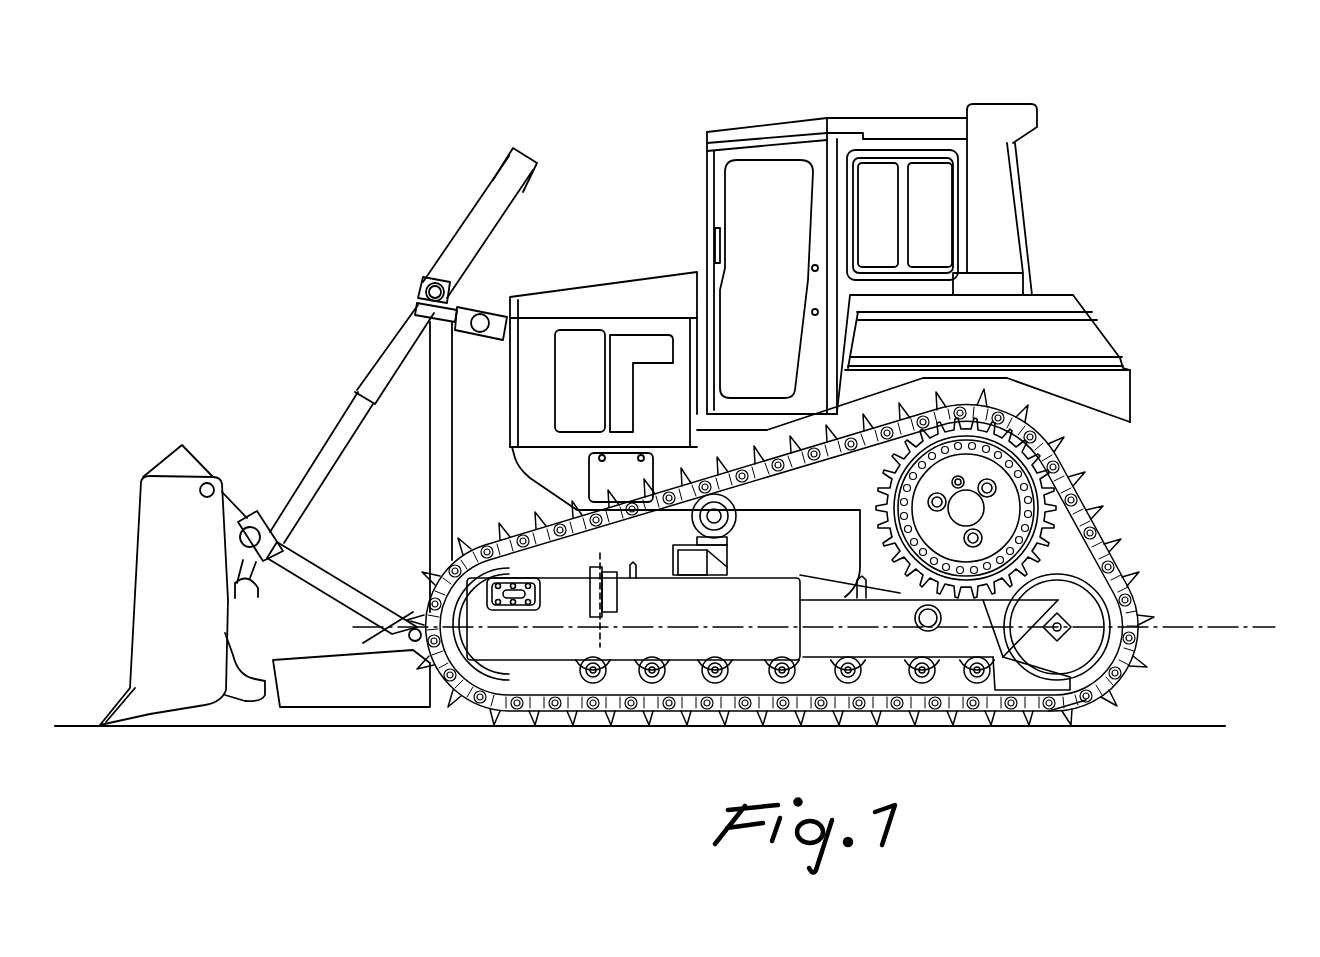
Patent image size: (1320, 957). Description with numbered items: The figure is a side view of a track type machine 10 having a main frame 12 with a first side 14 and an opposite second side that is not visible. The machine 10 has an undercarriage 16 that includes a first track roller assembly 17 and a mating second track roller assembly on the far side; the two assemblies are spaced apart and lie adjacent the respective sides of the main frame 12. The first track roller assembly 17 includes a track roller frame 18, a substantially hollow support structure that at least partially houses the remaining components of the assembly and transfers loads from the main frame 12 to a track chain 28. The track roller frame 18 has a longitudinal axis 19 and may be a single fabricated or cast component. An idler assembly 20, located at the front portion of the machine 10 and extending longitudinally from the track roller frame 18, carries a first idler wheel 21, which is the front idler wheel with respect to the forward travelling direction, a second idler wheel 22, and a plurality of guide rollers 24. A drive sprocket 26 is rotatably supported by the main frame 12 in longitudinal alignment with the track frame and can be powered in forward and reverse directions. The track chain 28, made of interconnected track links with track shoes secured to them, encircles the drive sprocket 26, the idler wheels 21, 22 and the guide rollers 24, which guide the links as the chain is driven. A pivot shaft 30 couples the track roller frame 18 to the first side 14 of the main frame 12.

The track type machine 10 is at (862, 331).
The main frame 12 is at (1025, 318).
The first side 14 is at (1050, 307).
The undercarriage 16 is at (835, 569).
The first track roller assembly 17 is at (1132, 544).
The track roller frame 18 is at (782, 518).
The longitudinal axis 19 is at (1252, 622).
The idler assembly 20 is at (524, 662).
The first idler wheel 21 is at (490, 668).
The second idler wheel 22 is at (1082, 640).
The guide rollers 24 is at (712, 690).
The drive sprocket 26 is at (1007, 510).
The track chain 28 is at (1078, 702).
The pivot shaft 30 is at (926, 632).